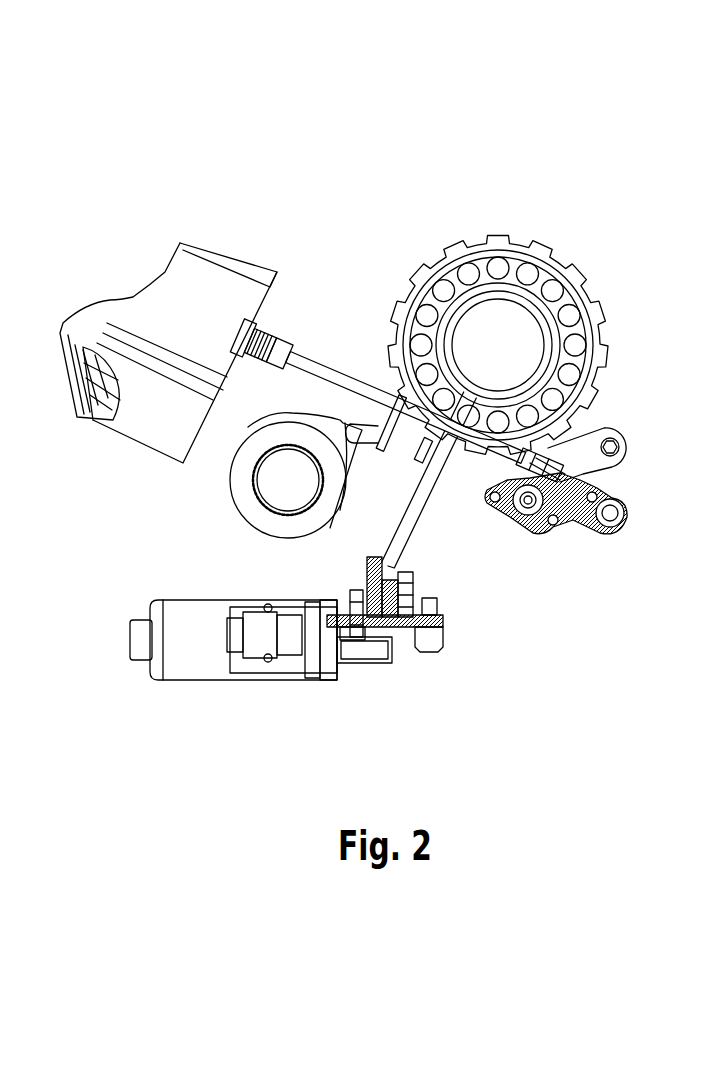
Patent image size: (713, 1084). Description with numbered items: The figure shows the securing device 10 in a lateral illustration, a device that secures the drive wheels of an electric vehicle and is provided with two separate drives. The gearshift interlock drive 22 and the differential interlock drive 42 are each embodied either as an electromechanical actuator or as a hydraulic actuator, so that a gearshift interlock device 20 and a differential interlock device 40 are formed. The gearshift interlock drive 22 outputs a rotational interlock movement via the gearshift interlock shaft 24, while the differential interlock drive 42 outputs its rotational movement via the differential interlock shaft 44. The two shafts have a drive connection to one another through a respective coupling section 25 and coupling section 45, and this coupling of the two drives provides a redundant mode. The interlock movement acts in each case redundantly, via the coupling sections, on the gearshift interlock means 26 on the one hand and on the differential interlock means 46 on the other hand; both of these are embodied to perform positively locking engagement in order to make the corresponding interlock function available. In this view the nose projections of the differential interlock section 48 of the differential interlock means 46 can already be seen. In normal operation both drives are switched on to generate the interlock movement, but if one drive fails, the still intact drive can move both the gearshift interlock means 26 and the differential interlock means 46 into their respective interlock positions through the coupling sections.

The securing device 10 is at (413, 158).
The gearshift interlock device 20 is at (253, 226).
The gearshift interlock drive 22 is at (177, 308).
The gearshift interlock shaft 24 is at (330, 364).
The coupling section 25 is at (409, 412).
The gearshift interlock means 26 is at (602, 430).
The differential interlock device 40 is at (480, 663).
The differential interlock drive 42 is at (192, 628).
The differential interlock shaft 44 is at (407, 525).
The coupling section 45 is at (428, 452).
The differential interlock means 46 is at (240, 472).
The differential interlock section 48 is at (257, 497).